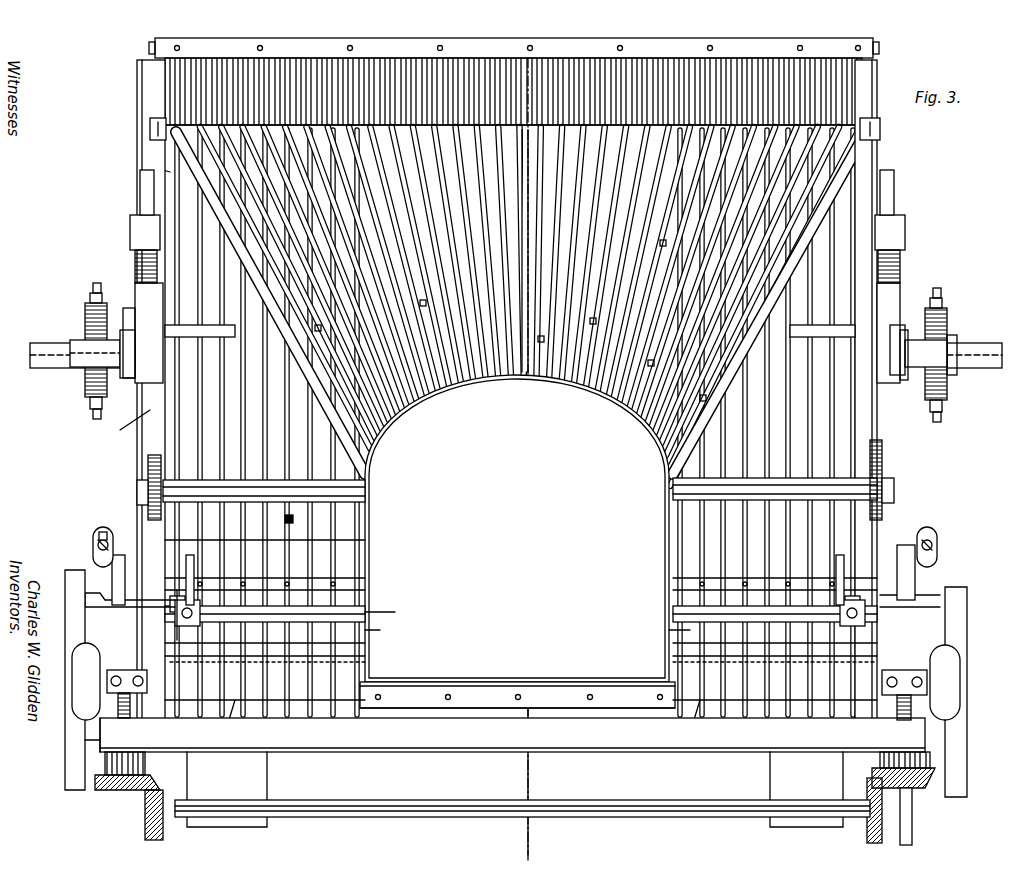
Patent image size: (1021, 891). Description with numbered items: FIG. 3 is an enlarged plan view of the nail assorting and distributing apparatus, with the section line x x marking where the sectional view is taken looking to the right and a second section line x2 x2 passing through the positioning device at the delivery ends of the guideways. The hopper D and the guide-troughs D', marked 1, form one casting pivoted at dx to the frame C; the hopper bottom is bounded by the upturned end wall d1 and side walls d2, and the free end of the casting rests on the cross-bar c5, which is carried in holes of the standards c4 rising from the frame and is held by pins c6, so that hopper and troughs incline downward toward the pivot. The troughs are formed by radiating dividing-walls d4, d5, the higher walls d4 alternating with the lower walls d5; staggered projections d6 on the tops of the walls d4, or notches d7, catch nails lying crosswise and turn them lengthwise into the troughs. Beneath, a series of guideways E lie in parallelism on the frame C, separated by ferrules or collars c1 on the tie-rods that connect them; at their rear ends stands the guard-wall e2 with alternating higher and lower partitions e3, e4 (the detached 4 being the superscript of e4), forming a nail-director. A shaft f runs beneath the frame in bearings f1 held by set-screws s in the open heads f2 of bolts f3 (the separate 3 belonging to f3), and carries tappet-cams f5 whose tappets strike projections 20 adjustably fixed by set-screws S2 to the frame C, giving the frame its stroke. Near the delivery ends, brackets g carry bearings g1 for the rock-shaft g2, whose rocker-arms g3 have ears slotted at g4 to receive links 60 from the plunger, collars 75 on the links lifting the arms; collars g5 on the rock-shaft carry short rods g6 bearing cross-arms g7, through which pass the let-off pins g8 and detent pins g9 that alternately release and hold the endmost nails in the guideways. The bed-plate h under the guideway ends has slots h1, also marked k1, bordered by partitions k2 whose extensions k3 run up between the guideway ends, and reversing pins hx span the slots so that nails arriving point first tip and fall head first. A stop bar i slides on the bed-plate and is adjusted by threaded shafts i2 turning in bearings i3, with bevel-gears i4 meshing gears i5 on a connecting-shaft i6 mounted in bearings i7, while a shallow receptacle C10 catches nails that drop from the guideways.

The section line x x is at (524, 446).
The partition k2 is at (420, 700).
The reversing pin hx is at (455, 724).
The dividing-wall d4 is at (700, 127).
The dividing-wall d5 is at (845, 125).
The notch d7 is at (585, 215).
The projection d6 is at (423, 303).
The hopper D is at (118, 190).
The guide-troughs 1 is at (145, 167).
The upturned end wall d1 is at (478, 684).
The slot h1 is at (190, 695).
The guard-wall e2 is at (514, 46).
The division-partition e3 is at (840, 80).
The division-partition e4 is at (860, 78).
The division-partition 4 is at (721, 42).
The guideway E is at (172, 438).
The frame C is at (885, 305).
The receptacle C10 is at (115, 425).
The pivot dx is at (882, 135).
The shaft f is at (975, 343).
The open head f2 is at (947, 372).
The bolt 3 is at (515, 352).
The bearing f1 is at (960, 330).
The bolt f3 is at (893, 355).
The tappet-cam f5 is at (135, 355).
The projection 20 is at (541, 327).
The set-screw S2 is at (905, 222).
The set-screw s is at (530, 352).
The ferrule or collar c1 is at (805, 337).
The cross-bar c5 is at (650, 498).
The standard c4 is at (885, 455).
The pin c6 is at (140, 488).
The cross-arm g7 is at (675, 645).
The rock-shaft g2 is at (655, 628).
The let-off pin g8 is at (383, 612).
The detent pin g9 is at (366, 530).
The extension k3 is at (672, 630).
The slot k1 is at (521, 665).
The side wall d2 is at (527, 583).
The section line x2 x2 is at (289, 651).
The bracket g is at (860, 595).
The bearing g1 is at (940, 598).
The rocker-arm g3 is at (915, 545).
The slot g4 is at (937, 540).
The link 60 is at (527, 541).
The collar 75 is at (541, 544).
The collar g5 is at (905, 550).
The transverse rod g6 is at (875, 545).
The bed-plate h is at (960, 640).
The bearing i3 is at (927, 672).
The threaded shaft i2 is at (912, 705).
The bevel-gear i4 is at (930, 785).
The bevel-gear i5 is at (880, 838).
The bearing i7 is at (810, 770).
The connecting-shaft i6 is at (440, 795).
The stop i is at (500, 752).